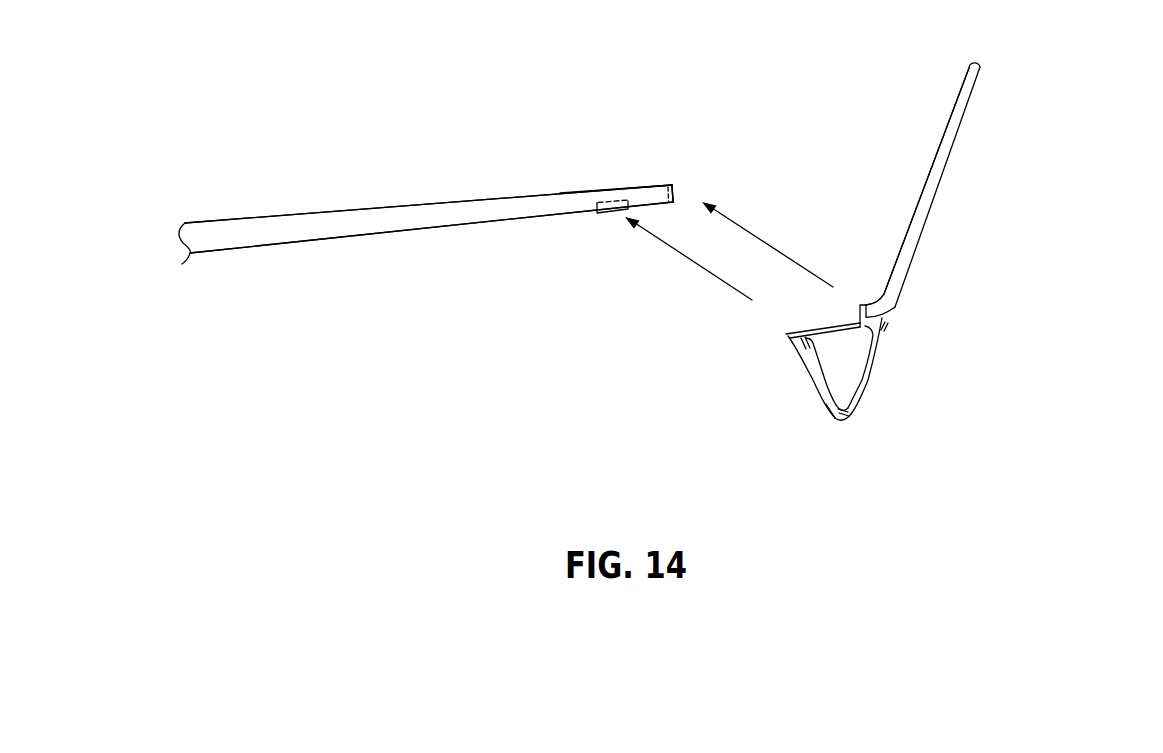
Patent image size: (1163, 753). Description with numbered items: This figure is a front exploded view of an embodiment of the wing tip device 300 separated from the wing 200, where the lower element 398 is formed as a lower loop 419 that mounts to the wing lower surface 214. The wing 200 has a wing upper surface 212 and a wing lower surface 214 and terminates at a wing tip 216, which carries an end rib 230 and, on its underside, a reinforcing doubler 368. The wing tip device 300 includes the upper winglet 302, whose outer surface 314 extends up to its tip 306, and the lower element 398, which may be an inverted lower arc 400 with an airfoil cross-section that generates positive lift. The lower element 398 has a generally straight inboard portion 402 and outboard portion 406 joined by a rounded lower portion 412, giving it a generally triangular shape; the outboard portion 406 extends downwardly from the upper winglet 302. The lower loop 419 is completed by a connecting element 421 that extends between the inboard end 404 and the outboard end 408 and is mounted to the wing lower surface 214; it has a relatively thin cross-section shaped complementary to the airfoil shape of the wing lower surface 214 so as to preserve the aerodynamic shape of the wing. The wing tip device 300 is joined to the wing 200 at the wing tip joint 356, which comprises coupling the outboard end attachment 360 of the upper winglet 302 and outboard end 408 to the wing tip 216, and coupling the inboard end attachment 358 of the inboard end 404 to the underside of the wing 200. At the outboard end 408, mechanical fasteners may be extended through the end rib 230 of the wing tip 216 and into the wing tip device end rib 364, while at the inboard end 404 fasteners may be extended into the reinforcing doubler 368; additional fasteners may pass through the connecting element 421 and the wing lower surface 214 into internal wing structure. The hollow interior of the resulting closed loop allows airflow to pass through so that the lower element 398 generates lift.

The wing 200 is at (280, 213).
The wing upper surface 212 is at (370, 208).
The wing lower surface 214 is at (402, 232).
The wing tip 216 is at (635, 187).
The end rib 230 is at (677, 193).
The wing tip joint 356 is at (686, 193).
The reinforcing doubler 368 is at (609, 214).
The connecting element 421 is at (838, 318).
The wing tip device 300 is at (924, 299).
The upper winglet 302 is at (965, 130).
The tip 306 is at (976, 62).
The outer surface 314 is at (958, 168).
The outboard end attachment 360 is at (884, 299).
The end rib 364 is at (865, 304).
The inboard end attachment 358 is at (786, 334).
The lower arc 400 is at (847, 444).
The inboard portion 402 is at (778, 379).
The inboard end 404 is at (798, 343).
The outboard portion 406 is at (911, 371).
The outboard end 408 is at (888, 332).
The lower element 398 is at (844, 439).
The rounded lower portion 412 is at (843, 418).
The lower loop 419 is at (823, 410).